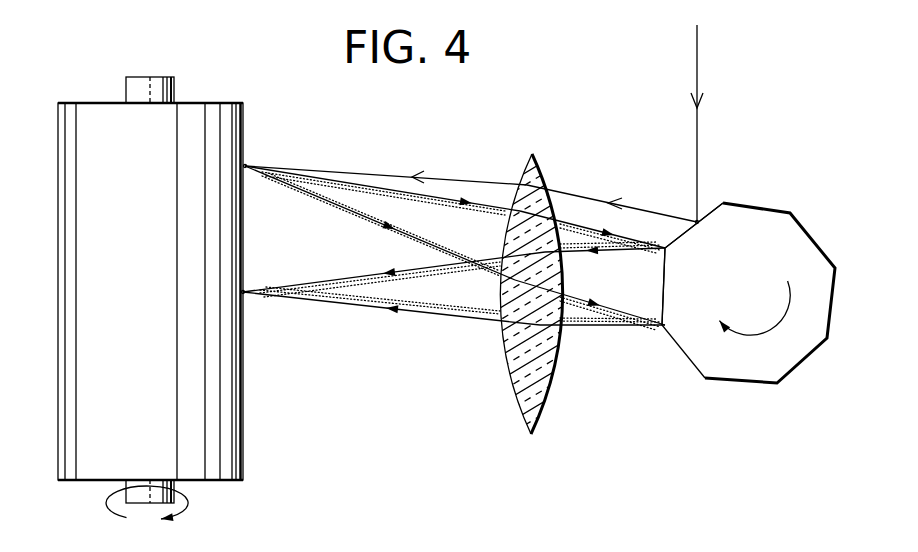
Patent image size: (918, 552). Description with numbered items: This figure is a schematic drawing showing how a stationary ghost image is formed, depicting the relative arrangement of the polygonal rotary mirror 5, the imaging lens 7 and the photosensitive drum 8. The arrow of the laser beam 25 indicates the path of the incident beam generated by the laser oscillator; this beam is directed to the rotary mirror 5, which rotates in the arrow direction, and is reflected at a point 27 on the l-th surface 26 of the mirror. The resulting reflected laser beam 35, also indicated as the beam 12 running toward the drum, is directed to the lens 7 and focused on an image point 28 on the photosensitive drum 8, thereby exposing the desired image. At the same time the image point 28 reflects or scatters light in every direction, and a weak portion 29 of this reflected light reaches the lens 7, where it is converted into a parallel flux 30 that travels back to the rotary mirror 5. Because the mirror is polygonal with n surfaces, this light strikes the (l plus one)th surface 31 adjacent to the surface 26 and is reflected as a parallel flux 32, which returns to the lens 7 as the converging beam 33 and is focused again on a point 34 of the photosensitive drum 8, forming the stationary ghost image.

The rotary mirror 5 is at (727, 363).
The imaging lens 7 is at (518, 400).
The photosensitive drum 8 is at (194, 462).
The scanning light beam 12 is at (420, 165).
The laser beam 25 is at (698, 76).
The l-th surface 26 is at (713, 205).
The point 27 is at (697, 222).
The image point 28 is at (246, 166).
The weak portion of reflected laser light 29 is at (380, 205).
The parallel flux 30 is at (575, 240).
The (l+1)th surface 31 is at (662, 287).
The parallel flux 32 is at (572, 308).
The return beam focused toward drum 33 is at (428, 283).
The point 34 is at (246, 295).
The laser beam 35 is at (640, 210).